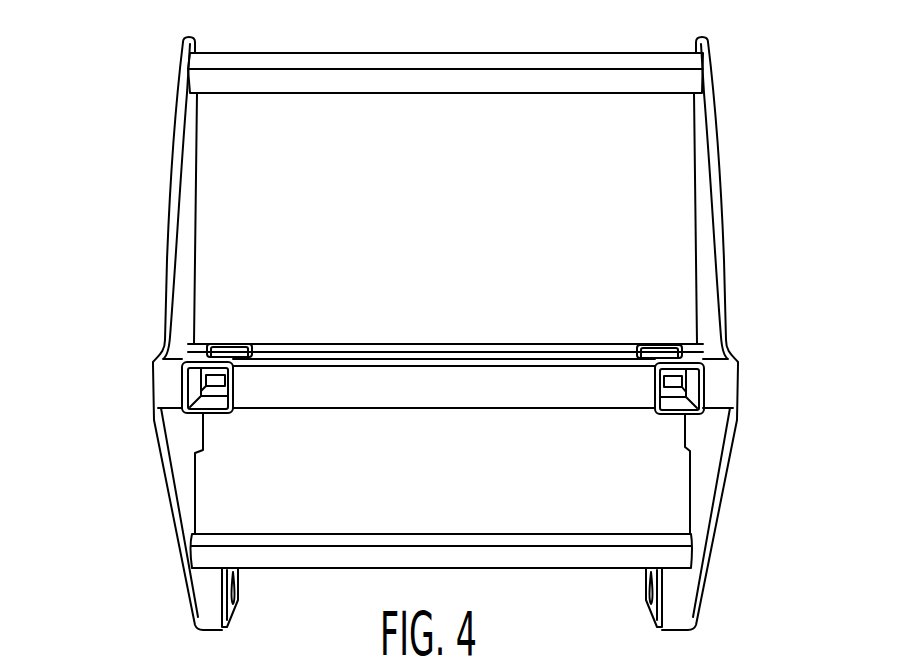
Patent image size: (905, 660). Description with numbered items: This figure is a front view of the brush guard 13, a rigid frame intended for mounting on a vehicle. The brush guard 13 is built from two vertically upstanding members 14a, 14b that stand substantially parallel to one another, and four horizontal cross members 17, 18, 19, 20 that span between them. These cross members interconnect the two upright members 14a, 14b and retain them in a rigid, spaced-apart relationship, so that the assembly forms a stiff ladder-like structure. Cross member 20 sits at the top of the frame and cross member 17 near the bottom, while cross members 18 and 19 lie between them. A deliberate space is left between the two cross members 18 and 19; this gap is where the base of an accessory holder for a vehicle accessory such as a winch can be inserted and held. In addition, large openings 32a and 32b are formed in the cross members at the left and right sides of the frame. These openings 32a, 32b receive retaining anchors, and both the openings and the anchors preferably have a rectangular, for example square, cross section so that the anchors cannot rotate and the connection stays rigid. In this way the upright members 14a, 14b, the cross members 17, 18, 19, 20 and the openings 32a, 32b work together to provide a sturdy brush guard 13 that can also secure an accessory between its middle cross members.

The brush guard 13 is at (762, 126).
The vertically upstanding member 14a is at (167, 212).
The vertically upstanding member 14b is at (723, 282).
The cross member 20 is at (430, 85).
The cross member 19 is at (447, 348).
The cross member 18 is at (343, 405).
The cross member 17 is at (556, 532).
The opening 32a is at (182, 388).
The opening 32b is at (737, 383).